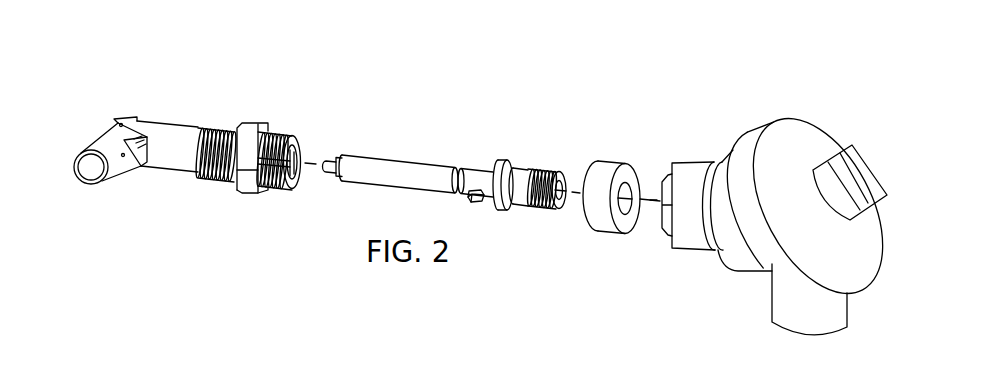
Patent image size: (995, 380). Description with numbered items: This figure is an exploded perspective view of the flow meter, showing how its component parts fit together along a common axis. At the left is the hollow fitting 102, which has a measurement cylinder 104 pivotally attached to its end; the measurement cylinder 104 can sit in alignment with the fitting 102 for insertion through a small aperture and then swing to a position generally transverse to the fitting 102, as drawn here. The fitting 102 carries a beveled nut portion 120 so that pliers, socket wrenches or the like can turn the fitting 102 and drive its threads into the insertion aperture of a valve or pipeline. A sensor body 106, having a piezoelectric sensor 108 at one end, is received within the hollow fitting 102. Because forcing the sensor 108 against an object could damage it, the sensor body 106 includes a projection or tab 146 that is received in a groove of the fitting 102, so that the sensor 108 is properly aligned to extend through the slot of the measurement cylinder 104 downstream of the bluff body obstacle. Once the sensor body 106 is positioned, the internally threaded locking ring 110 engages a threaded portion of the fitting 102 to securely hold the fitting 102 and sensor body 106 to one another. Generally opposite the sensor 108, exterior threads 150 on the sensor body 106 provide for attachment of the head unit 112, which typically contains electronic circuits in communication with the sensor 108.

The fitting 102 is at (175, 138).
The measurement cylinder 104 is at (100, 143).
The sensor body 106 is at (403, 170).
The sensor 108 is at (335, 160).
The locking ring 110 is at (603, 165).
The head unit 112 is at (750, 143).
The beveled nut portion 120 is at (253, 127).
The tab 146 is at (477, 190).
The exterior threads 150 is at (546, 173).